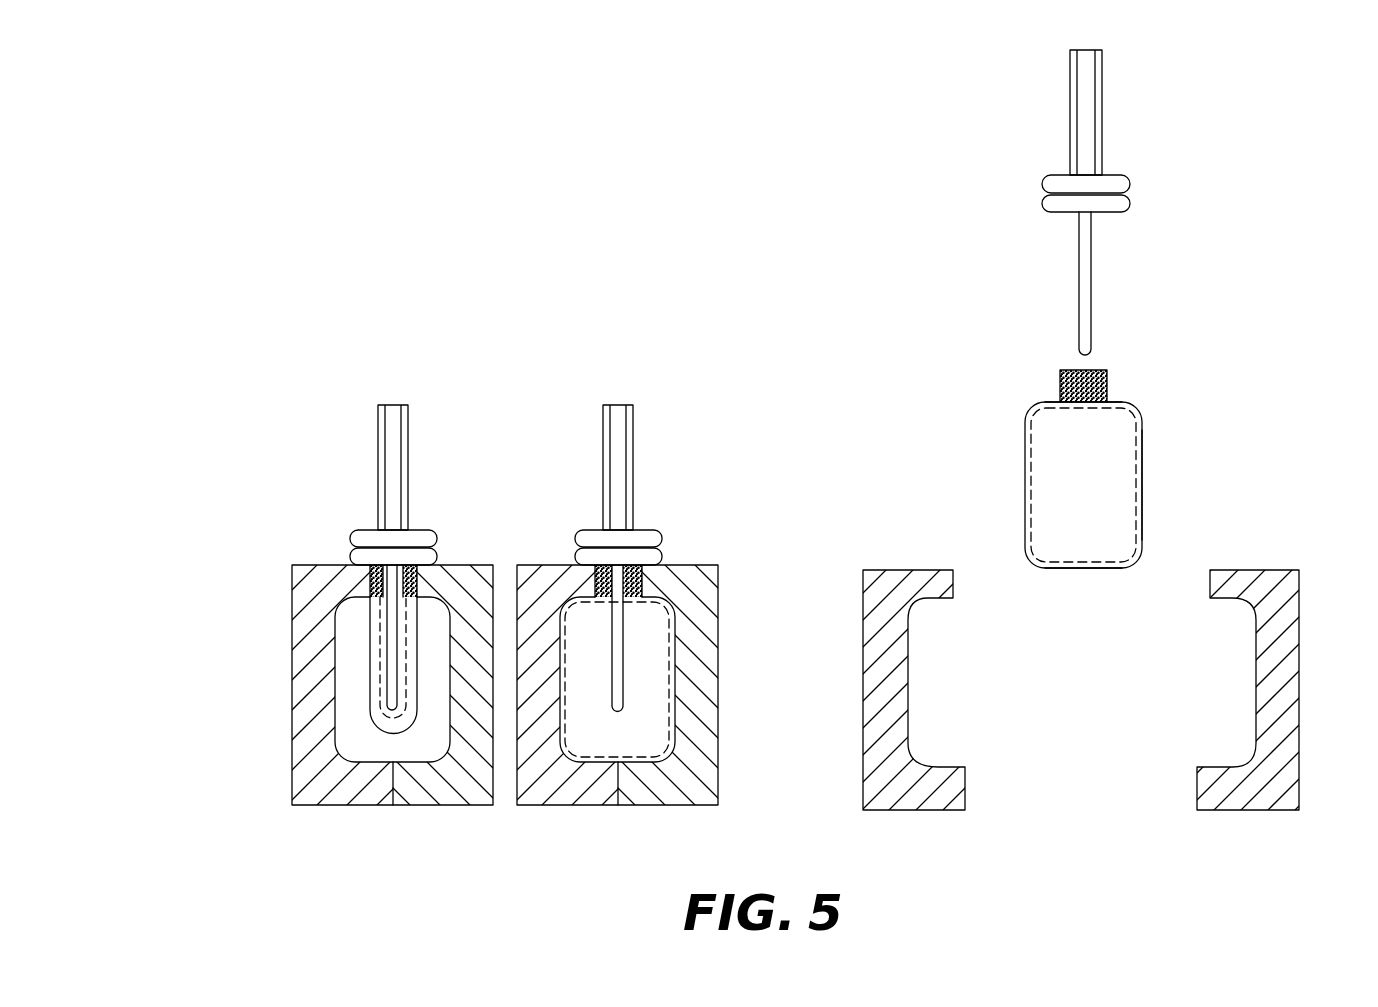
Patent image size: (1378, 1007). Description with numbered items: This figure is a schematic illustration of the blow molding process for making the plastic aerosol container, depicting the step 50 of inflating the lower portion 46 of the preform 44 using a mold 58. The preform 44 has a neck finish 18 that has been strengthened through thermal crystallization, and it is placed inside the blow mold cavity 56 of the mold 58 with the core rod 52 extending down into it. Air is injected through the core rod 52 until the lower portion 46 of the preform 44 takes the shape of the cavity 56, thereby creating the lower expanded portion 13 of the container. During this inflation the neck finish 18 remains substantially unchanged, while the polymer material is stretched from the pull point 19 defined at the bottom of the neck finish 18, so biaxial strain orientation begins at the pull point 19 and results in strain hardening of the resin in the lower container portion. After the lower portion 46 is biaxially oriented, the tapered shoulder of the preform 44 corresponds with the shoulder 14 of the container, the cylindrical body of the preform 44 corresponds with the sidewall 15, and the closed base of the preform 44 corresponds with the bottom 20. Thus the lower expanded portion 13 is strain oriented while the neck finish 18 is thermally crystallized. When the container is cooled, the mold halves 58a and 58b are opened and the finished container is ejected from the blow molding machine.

The step of inflating 50 is at (575, 290).
The mold 58 is at (292, 805).
The mold half 58a is at (900, 570).
The mold half 58b is at (1258, 570).
The blow mold cavity 56 is at (352, 742).
The core rod 52 is at (625, 655).
The neck finish 18 is at (365, 583).
The lower portion 46 is at (368, 640).
The preform 44 is at (368, 692).
The lower expanded portion 13 is at (650, 732).
The shoulder 14 is at (1140, 410).
The pull point 19 is at (1060, 398).
The sidewall 15 is at (1143, 497).
The bottom 20 is at (1072, 570).